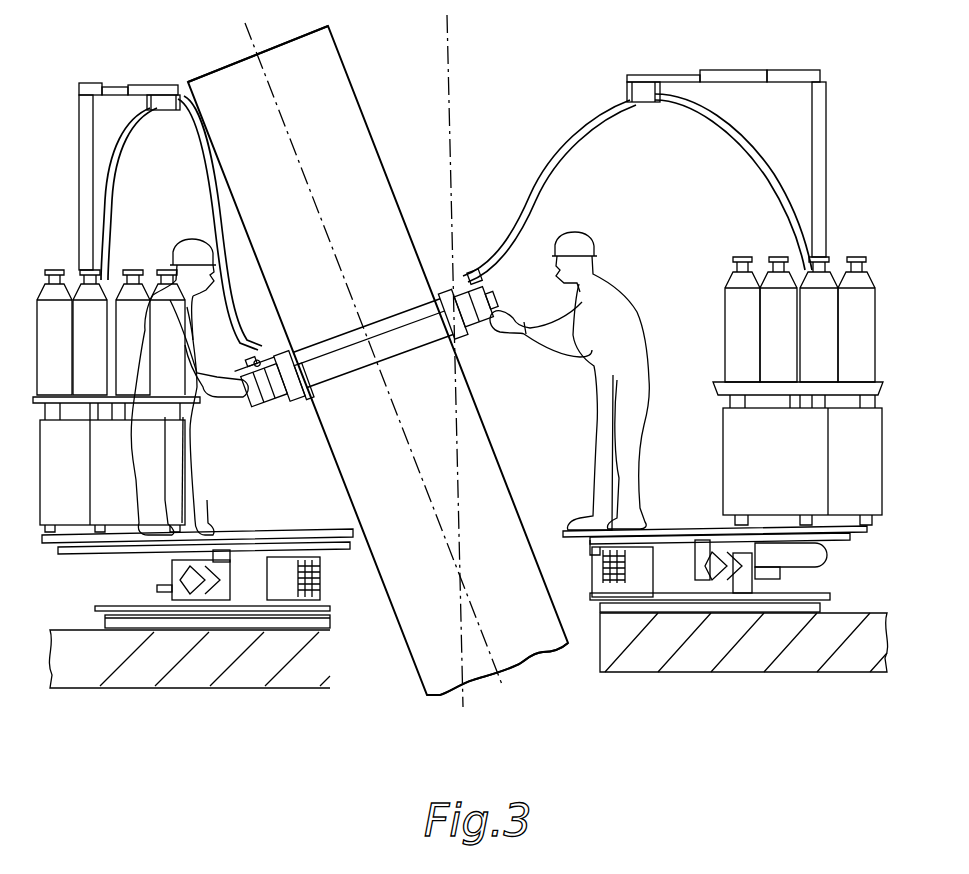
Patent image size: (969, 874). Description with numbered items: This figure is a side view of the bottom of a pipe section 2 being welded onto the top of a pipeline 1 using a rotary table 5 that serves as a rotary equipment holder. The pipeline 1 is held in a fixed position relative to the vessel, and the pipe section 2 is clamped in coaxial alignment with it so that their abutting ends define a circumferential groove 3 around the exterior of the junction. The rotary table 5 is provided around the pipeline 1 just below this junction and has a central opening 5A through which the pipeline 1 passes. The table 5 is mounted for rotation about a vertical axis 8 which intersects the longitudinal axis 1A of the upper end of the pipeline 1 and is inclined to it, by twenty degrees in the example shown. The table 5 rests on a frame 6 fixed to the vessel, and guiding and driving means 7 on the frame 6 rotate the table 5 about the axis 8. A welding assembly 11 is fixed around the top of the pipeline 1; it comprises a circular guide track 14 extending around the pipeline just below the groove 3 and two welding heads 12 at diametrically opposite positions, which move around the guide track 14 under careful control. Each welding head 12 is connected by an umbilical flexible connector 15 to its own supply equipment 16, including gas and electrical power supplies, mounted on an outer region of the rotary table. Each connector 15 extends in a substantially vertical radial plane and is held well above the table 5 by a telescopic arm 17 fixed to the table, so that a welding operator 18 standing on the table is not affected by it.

The pipeline 1 is at (494, 444).
The longitudinal axis 1A is at (490, 645).
The pipe section 2 is at (355, 93).
The circumferential groove 3 is at (374, 322).
The rotary table 5 is at (268, 536).
The central opening 5A is at (374, 659).
The frame 6 is at (103, 622).
The guiding and driving means 7 is at (645, 572).
The vertical axis 8 is at (448, 45).
The welding assembly 11 is at (298, 413).
The welding heads 12 is at (262, 406).
The circular guide track 14 is at (390, 352).
The umbilical flexible connector 15 is at (194, 133).
The supply equipment 16 is at (52, 263).
The telescopic arm 17 is at (117, 84).
The welding operator 18 is at (620, 340).